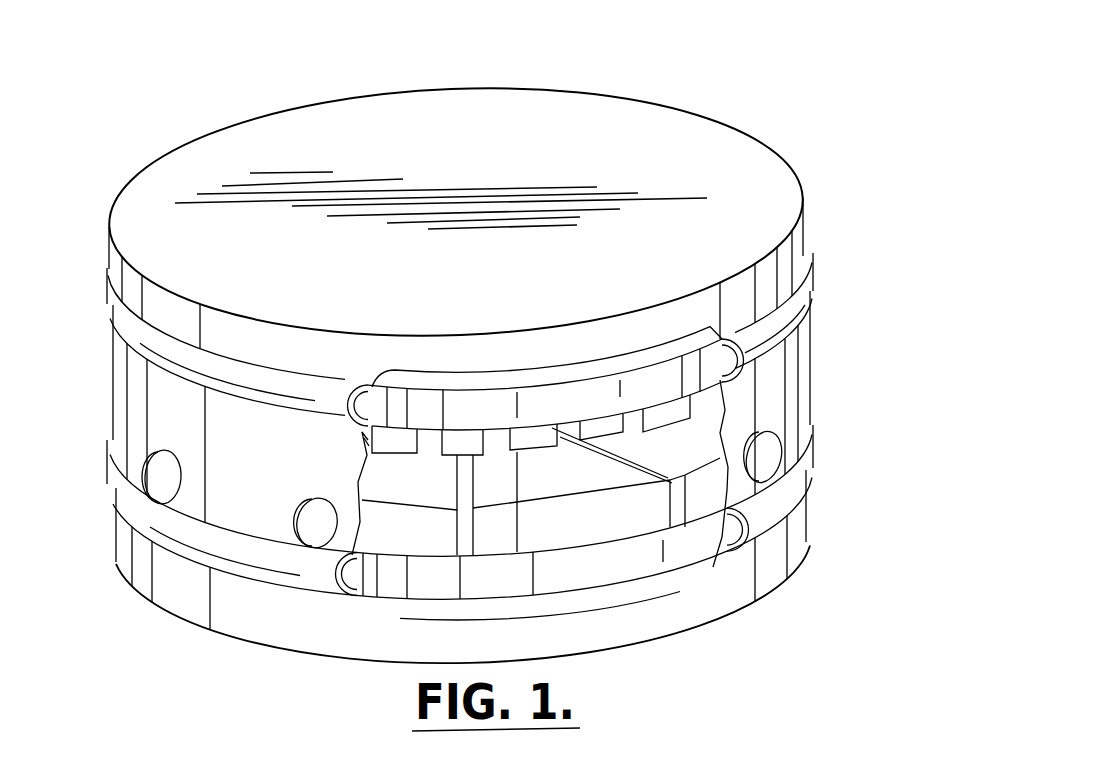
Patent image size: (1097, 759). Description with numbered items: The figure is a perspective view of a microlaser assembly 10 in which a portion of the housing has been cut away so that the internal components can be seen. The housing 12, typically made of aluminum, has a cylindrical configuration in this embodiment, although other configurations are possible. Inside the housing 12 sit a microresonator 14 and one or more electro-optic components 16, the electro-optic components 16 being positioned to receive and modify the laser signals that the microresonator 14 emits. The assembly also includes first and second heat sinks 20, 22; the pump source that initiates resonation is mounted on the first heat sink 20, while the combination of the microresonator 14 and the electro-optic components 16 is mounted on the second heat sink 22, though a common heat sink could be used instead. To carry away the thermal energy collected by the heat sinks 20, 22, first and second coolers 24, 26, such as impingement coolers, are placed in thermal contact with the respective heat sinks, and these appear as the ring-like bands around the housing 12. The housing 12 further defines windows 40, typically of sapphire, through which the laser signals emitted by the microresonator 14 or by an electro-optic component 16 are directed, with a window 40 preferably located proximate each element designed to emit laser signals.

The microlaser assembly 10 is at (660, 85).
The housing 12 is at (790, 262).
The microresonator 14 is at (552, 533).
The electro-optic component 16 is at (397, 533).
The first heat sink 20 is at (650, 383).
The second heat sink 22 is at (682, 545).
The first cooler 24 is at (803, 297).
The second cooler 26 is at (803, 477).
The windows 40 is at (160, 480).